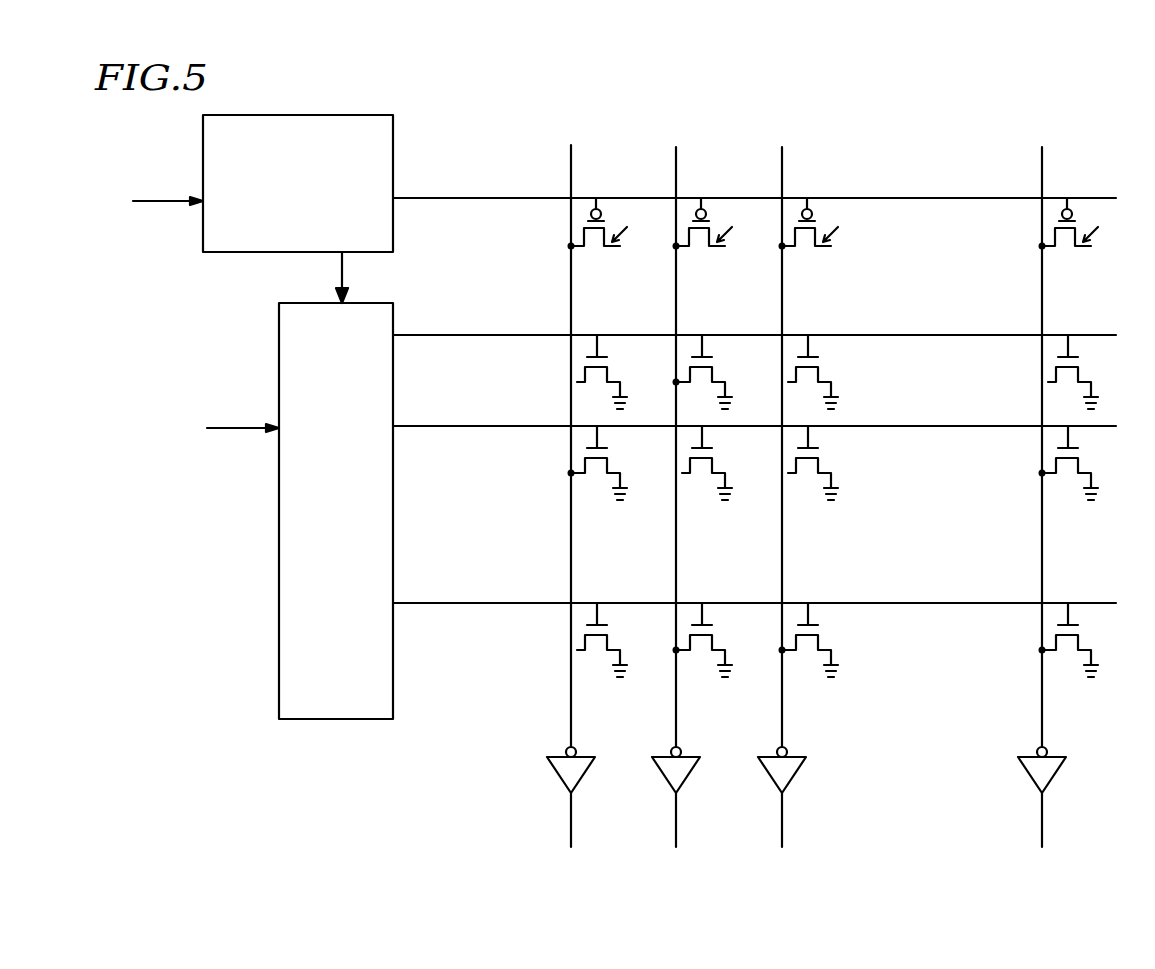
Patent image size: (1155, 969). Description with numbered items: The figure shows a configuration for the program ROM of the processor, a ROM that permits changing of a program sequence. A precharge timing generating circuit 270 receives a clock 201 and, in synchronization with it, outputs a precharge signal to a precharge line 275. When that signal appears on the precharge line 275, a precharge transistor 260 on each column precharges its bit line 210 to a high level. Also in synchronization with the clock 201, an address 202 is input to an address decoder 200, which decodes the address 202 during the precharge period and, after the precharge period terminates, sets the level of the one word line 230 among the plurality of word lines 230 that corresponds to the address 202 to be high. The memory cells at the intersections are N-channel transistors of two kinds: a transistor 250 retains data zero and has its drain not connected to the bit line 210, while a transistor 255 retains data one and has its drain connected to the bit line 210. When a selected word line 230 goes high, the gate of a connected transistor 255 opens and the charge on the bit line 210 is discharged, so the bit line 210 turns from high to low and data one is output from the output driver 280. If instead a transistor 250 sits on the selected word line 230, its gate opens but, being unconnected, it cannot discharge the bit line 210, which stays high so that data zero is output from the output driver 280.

The address decoder 200 is at (315, 720).
The clock 201 is at (135, 218).
The address 202 is at (213, 446).
The bit line 210 is at (571, 152).
The word line 230 is at (412, 337).
The N-channel transistor 250 is at (580, 370).
The N-channel transistor 255 is at (686, 370).
The precharge transistor 260 is at (598, 252).
The precharge timing generating circuit 270 is at (245, 252).
The precharge line 275 is at (412, 199).
The output driver 280 is at (551, 766).